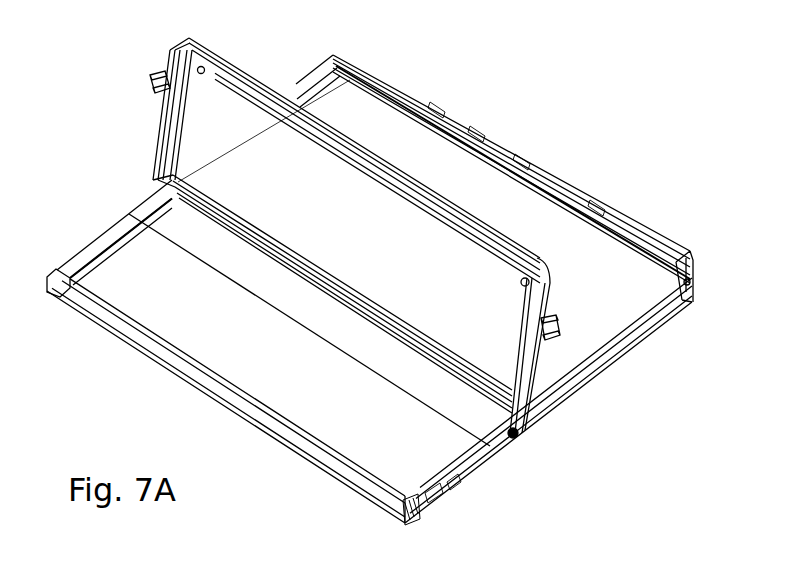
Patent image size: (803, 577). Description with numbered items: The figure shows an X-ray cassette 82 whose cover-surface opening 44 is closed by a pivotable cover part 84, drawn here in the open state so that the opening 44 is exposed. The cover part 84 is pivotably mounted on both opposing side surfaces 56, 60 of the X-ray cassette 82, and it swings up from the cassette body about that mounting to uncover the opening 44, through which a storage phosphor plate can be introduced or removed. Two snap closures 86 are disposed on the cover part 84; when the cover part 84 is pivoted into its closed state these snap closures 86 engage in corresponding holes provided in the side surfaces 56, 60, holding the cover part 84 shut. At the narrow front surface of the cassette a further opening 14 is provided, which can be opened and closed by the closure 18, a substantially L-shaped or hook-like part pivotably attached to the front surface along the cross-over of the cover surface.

The opening 14 is at (478, 131).
The closure 18 is at (677, 267).
The opening 44 is at (143, 307).
The side surface 56 is at (463, 470).
The side surface 60 is at (94, 249).
The X-ray cassette 82 is at (557, 447).
The cover part 84 is at (218, 97).
The snap closure 86 is at (150, 80).